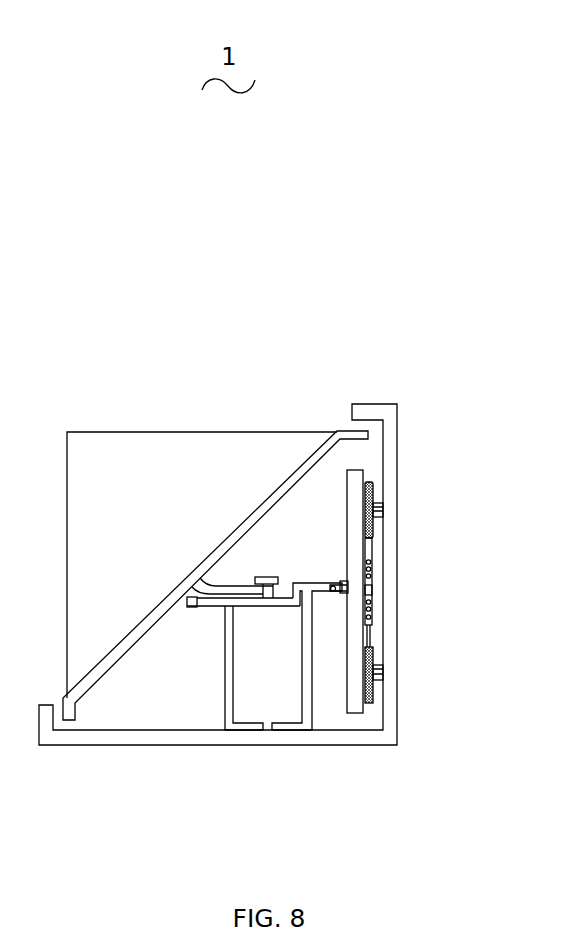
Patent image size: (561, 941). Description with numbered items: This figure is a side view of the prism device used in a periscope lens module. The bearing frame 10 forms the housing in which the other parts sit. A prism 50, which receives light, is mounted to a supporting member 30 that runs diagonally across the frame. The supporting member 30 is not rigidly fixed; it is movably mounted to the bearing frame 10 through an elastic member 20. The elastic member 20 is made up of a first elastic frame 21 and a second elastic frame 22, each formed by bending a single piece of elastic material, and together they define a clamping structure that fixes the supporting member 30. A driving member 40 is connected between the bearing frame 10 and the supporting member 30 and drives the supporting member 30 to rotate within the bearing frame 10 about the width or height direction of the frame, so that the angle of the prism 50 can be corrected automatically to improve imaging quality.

The bearing frame 10 is at (378, 737).
The elastic member 20 is at (268, 723).
The first elastic frame 21 is at (233, 730).
The second elastic frame 22 is at (311, 694).
The supporting member 30 is at (82, 687).
The driving member 40 is at (372, 560).
The prism 50 is at (155, 460).